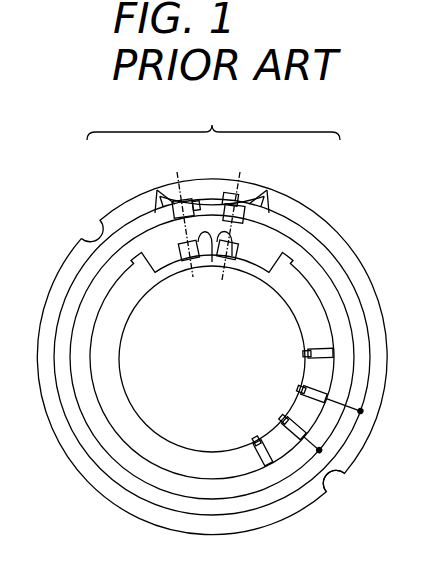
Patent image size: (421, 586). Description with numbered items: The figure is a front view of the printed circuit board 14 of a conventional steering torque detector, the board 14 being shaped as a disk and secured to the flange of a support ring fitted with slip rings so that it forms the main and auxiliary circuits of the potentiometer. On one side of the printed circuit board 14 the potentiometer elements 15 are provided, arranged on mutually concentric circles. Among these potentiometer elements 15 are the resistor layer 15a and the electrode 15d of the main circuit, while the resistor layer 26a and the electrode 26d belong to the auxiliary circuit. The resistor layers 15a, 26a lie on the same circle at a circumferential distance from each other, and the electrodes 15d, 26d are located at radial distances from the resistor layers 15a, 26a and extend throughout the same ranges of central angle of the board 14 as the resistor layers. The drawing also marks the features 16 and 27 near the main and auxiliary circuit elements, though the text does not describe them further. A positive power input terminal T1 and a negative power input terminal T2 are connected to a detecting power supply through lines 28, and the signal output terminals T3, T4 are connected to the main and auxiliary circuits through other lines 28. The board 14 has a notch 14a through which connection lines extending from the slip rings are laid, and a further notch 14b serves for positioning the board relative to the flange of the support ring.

The printed circuit board 14 is at (62, 272).
The notch 14a is at (273, 443).
The notch 14b is at (334, 473).
The potentiometer elements 15 is at (222, 120).
The resistor layer 15a is at (174, 198).
The electrode 15d is at (181, 242).
The contact tongue 16 is at (212, 262).
The resistor layer 26a is at (243, 202).
The electrode 26d is at (245, 237).
The contact tongue 27 is at (232, 256).
The lines 28 is at (167, 472).
The positive power input terminal T1 is at (320, 399).
The negative power input terminal T2 is at (292, 429).
The signal output terminal T3 is at (256, 446).
The signal output terminal T4 is at (305, 356).